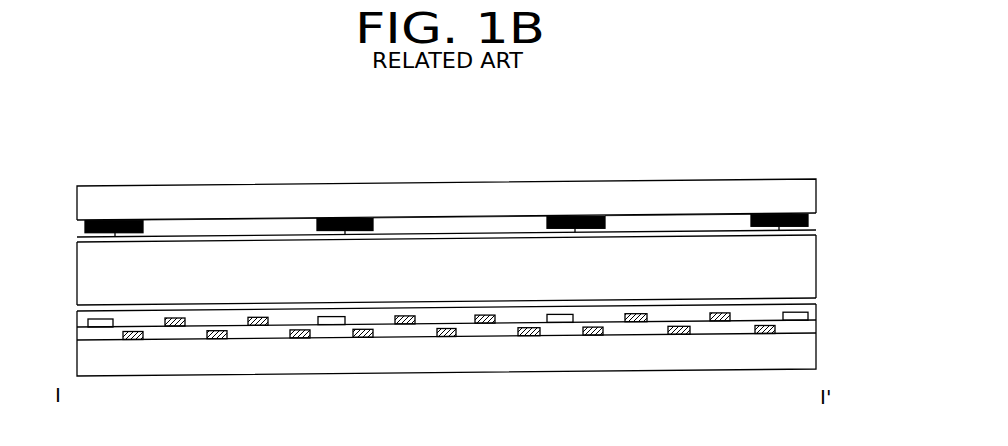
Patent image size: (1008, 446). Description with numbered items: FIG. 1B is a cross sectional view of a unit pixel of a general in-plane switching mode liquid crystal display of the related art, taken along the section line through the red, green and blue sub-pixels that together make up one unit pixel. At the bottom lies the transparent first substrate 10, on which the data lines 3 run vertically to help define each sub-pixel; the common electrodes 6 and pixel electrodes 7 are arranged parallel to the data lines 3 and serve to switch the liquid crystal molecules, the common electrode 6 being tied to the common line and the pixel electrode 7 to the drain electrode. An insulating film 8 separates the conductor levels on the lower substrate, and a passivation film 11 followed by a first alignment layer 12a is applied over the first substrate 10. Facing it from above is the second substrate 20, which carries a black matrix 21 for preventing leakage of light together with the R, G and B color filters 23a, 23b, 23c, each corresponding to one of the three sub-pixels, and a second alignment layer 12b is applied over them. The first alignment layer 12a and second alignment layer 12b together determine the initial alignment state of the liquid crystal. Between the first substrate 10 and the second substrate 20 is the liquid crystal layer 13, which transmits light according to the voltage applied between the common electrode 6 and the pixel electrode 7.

The data line 3 is at (100, 327).
The common electrode 6 is at (133, 340).
The pixel electrode 7 is at (175, 327).
The gate insulating layer 8 is at (816, 331).
The first substrate 10 is at (816, 355).
The passivation film 11 is at (816, 316).
The first alignment layer 12a is at (816, 300).
The second alignment layer 12b is at (816, 232).
The liquid crystal layer 13 is at (816, 260).
The second substrate 20 is at (816, 195).
The black matrix 21 is at (124, 221).
The R color filter 23a is at (188, 226).
The G color filter 23b is at (500, 221).
The B color filter 23c is at (722, 218).